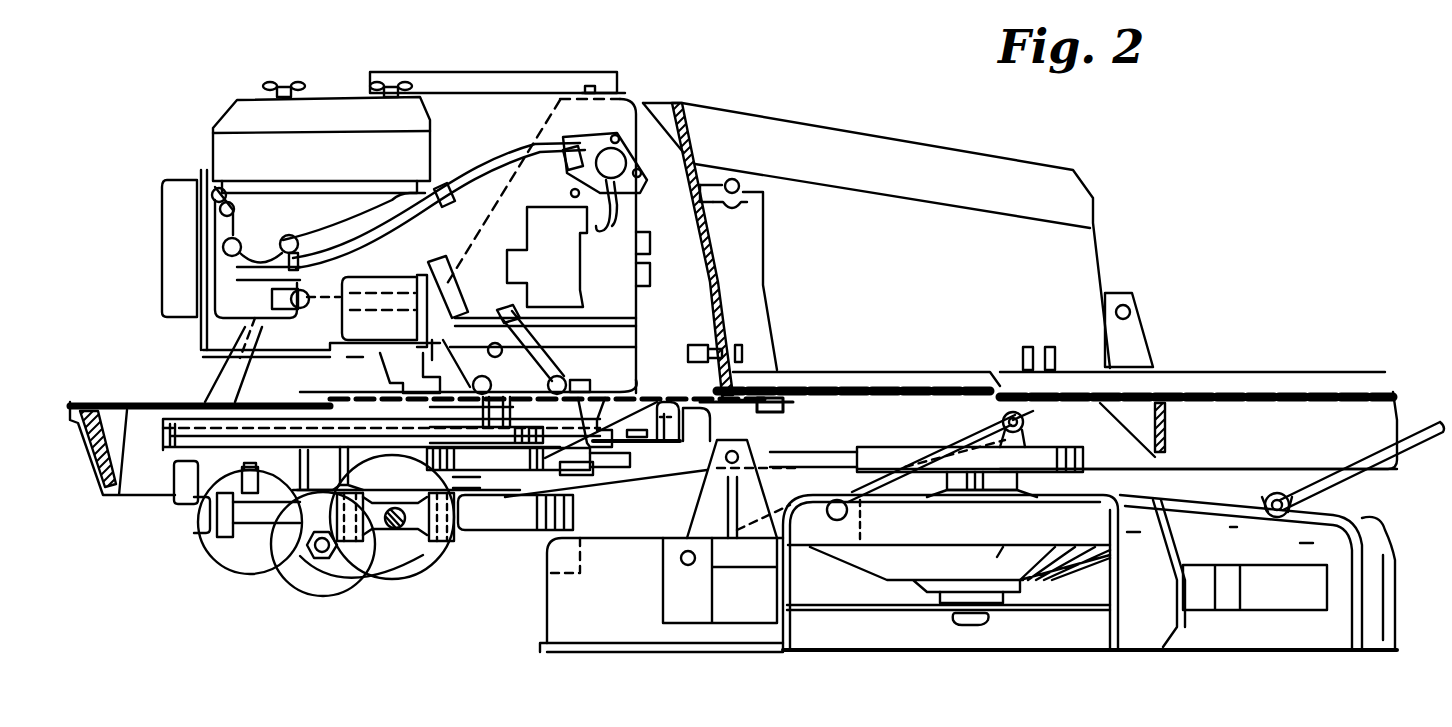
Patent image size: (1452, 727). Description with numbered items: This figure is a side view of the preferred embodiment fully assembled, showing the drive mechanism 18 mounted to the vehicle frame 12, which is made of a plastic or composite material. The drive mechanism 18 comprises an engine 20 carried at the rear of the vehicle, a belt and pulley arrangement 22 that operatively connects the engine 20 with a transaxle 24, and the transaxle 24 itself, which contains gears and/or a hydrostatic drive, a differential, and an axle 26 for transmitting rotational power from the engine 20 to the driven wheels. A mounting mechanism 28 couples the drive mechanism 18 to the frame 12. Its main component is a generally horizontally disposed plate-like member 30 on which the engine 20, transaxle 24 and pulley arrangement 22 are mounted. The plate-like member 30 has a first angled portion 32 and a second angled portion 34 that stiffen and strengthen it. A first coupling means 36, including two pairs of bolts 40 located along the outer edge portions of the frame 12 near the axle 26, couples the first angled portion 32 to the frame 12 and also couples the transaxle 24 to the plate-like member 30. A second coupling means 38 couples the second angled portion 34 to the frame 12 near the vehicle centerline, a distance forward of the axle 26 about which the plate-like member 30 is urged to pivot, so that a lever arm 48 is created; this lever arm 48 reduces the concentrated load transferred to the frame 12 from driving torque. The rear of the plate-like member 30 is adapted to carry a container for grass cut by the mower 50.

The frame 12 is at (870, 383).
The drive mechanism 18 is at (180, 562).
The engine 20 is at (212, 120).
The belt and pulley arrangement 22 is at (146, 462).
The transaxle 24 is at (431, 580).
The axle 26 is at (393, 530).
The mounting mechanism 28 is at (193, 380).
The plate-like member 30 is at (630, 397).
The first angled portion 32 is at (582, 390).
The second angled portion 34 is at (703, 340).
The first coupling means 36 is at (458, 560).
The second coupling means 38 is at (741, 337).
The bolts 40 is at (347, 550).
The lever arm 48 is at (650, 400).
The mower 50 is at (845, 655).